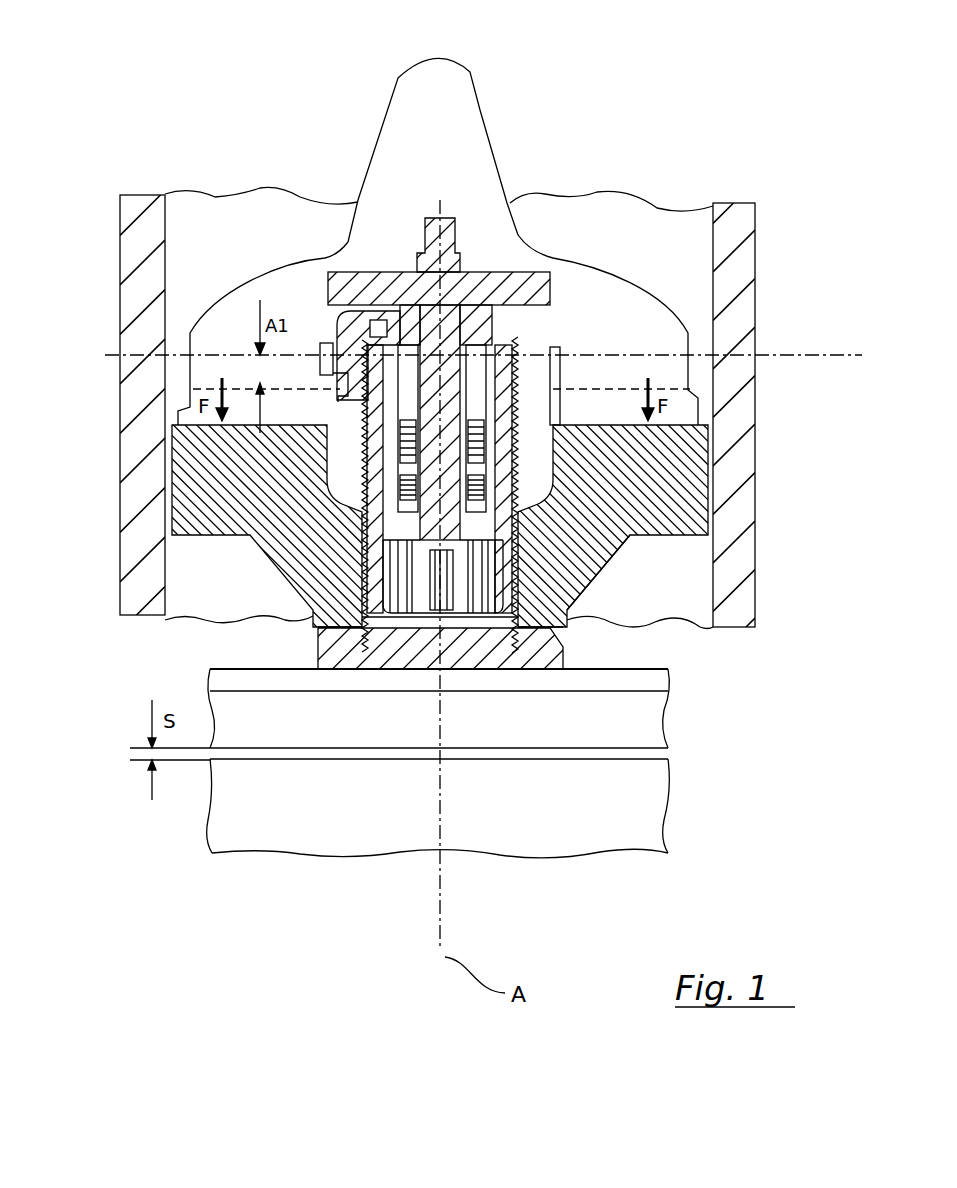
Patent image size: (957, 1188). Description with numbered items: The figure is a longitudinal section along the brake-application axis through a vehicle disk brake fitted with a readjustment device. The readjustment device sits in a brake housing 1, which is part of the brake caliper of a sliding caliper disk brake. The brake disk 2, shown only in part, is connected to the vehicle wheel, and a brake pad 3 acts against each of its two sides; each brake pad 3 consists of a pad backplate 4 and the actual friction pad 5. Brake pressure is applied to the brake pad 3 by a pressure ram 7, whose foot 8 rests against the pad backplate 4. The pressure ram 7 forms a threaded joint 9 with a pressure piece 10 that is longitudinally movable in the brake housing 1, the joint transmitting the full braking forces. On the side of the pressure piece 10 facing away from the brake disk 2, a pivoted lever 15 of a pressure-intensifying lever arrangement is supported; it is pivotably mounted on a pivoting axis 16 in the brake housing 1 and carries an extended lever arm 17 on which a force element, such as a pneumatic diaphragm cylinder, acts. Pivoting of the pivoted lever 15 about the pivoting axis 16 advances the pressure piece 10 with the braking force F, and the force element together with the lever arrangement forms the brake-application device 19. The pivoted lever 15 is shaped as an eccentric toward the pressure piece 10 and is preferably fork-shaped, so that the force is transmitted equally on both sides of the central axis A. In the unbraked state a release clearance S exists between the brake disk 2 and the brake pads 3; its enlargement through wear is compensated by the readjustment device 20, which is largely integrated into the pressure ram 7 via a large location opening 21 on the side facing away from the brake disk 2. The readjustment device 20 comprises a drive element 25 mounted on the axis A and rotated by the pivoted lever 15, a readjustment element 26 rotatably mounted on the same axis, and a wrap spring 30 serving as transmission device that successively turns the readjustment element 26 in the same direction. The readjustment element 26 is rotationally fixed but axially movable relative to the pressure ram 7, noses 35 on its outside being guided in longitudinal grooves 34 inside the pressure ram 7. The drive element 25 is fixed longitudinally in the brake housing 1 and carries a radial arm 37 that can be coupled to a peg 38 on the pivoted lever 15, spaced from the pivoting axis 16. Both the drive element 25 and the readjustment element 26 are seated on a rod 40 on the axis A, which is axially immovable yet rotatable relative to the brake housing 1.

The brake housing 1 is at (755, 457).
The brake disk 2 is at (643, 813).
The brake pad 3 is at (688, 715).
The pad backplate 4 is at (650, 678).
The friction pad 5 is at (643, 738).
The pressure ram 7 is at (702, 512).
The foot 8 is at (370, 660).
The threaded joint 9 is at (440, 540).
The pressure piece 10 is at (727, 618).
The pivoted lever 15 is at (240, 317).
The pivoting axis 16 is at (853, 345).
The lever arm 17 is at (460, 98).
The brake-application device 19 is at (514, 217).
The readjustment device 20 is at (580, 557).
The location opening 21 is at (425, 630).
The drive element 25 is at (450, 353).
The readjustment element 26 is at (390, 515).
The wrap spring 30 is at (410, 467).
The longitudinal grooves 34 is at (452, 600).
The noses 35 is at (508, 560).
The radial arm 37 is at (343, 353).
The peg 38 is at (333, 378).
The rod 40 is at (483, 363).